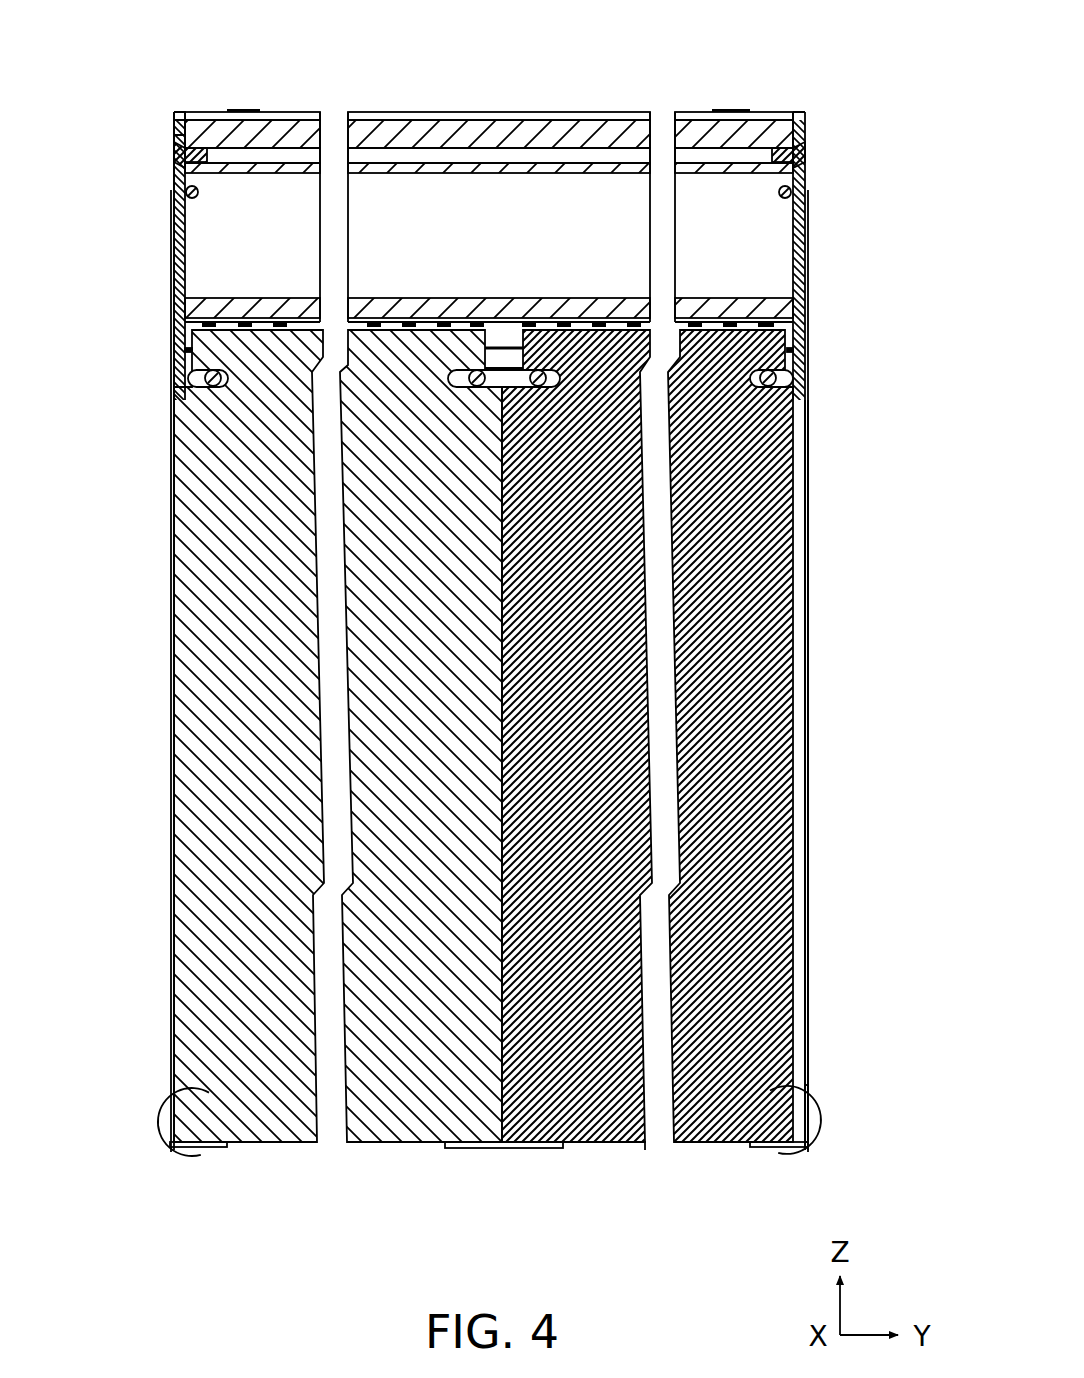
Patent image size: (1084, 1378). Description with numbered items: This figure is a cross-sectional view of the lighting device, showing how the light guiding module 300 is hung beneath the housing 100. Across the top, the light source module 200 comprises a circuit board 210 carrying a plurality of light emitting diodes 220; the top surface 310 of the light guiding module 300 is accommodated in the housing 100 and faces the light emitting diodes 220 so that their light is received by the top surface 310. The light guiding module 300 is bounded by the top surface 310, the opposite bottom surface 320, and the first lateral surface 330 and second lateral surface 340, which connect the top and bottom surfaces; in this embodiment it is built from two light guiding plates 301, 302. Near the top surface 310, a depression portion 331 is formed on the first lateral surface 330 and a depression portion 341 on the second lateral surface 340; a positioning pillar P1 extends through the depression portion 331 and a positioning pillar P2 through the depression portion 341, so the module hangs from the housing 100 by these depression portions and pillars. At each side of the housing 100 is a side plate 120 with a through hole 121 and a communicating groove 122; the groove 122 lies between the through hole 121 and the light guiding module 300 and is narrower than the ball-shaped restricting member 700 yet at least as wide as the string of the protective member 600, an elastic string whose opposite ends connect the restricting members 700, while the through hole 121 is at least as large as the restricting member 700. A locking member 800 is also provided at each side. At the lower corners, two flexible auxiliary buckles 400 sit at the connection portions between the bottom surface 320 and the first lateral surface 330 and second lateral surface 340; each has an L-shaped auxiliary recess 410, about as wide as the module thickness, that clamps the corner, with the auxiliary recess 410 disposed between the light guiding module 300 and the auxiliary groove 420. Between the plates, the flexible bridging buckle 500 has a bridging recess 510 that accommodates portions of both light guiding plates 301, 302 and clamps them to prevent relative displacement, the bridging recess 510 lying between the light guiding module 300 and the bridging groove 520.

The housing 100 is at (816, 116).
The side plate 120 is at (129, 240).
The through hole 121 is at (180, 148).
The groove 122 is at (188, 190).
The light source module 200 is at (489, 164).
The circuit board 210 is at (735, 325).
The light emitting diodes 220 is at (612, 325).
The light guiding module 300 is at (487, 798).
The light guiding plate 301 is at (290, 1110).
The light guiding plate 302 is at (628, 1110).
The top surface 310 is at (385, 325).
The bottom surface 320 is at (402, 1145).
The first lateral surface 330 is at (194, 779).
The depression portion 331 is at (189, 350).
The second lateral surface 340 is at (786, 735).
The depression portion 341 is at (790, 350).
The auxiliary buckle 400 is at (487, 1140).
The auxiliary recess 410 is at (806, 1086).
The auxiliary groove 420 is at (785, 1147).
The bridging buckle 500 is at (503, 1142).
The bridging recess 510 is at (577, 779).
The bridging groove 520 is at (466, 1148).
The protective member 600 is at (808, 690).
The restricting member 700 is at (177, 152).
The locking member 800 is at (185, 155).
The positioning pillar P1 is at (213, 378).
The positioning pillar P2 is at (768, 378).